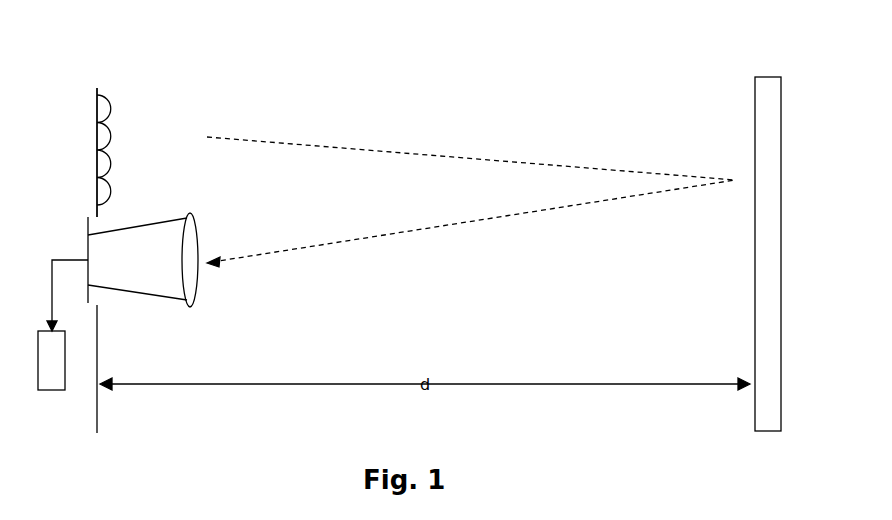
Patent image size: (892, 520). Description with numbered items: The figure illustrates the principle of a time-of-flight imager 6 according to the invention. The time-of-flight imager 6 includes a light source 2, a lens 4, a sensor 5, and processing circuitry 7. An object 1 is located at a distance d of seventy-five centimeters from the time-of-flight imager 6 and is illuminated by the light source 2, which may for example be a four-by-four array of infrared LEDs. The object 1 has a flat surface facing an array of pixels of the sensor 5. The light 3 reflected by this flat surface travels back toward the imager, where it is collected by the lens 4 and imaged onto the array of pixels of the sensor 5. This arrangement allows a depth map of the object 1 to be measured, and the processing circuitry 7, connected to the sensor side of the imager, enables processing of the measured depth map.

The object 1 is at (747, 103).
The light source 2 is at (118, 102).
The light 3 is at (482, 225).
The lens 4 is at (200, 282).
The sensor 5 is at (87, 248).
The time-of-flight imager 6 is at (79, 175).
The processing circuitry 7 is at (55, 400).